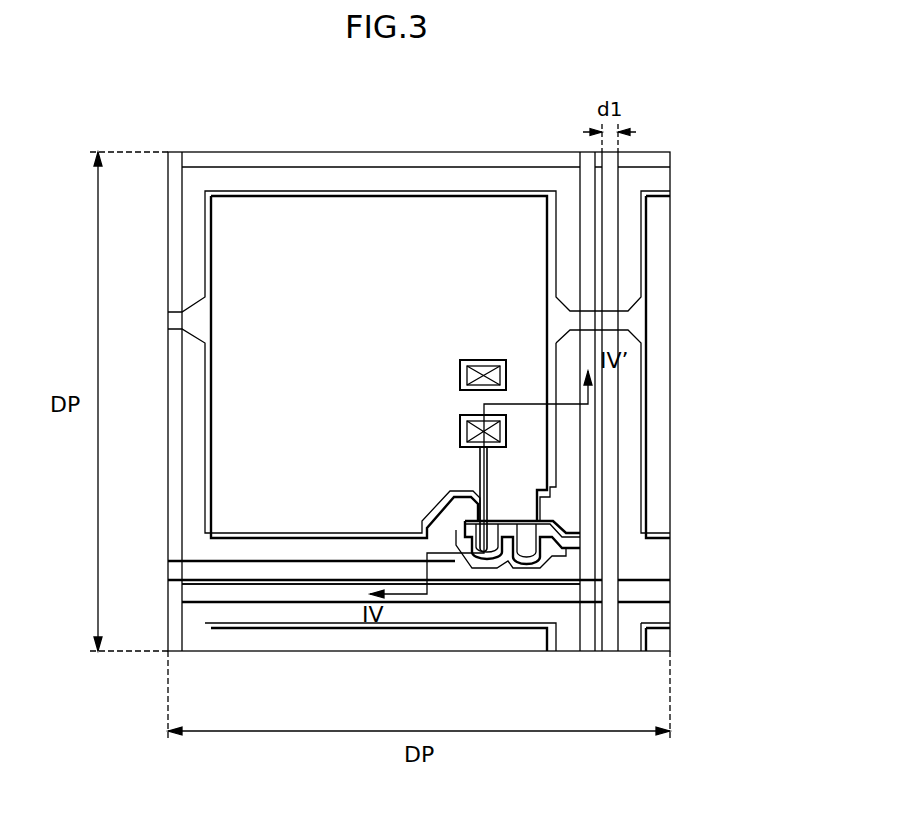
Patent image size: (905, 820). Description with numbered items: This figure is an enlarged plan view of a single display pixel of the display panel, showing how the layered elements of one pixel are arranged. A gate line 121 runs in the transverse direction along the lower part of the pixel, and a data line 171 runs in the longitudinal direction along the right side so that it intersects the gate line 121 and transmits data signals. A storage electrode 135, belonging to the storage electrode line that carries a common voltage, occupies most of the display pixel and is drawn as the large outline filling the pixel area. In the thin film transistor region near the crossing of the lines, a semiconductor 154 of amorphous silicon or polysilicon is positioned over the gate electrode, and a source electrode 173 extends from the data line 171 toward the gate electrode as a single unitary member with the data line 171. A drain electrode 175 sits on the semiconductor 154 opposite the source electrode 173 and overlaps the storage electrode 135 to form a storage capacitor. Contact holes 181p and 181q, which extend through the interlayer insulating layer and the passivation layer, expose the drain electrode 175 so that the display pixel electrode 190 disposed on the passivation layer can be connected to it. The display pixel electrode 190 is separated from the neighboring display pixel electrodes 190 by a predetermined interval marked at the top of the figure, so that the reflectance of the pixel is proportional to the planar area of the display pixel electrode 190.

The gate line 121 is at (652, 560).
The storage electrode 135 is at (560, 243).
The semiconductor 154 is at (540, 537).
The data line 171 is at (588, 450).
The source electrode 173 is at (487, 567).
The drain electrode 175 is at (318, 540).
The contact hole 181p is at (460, 439).
The contact hole 181q is at (467, 427).
The display pixel electrode 190 is at (602, 222).